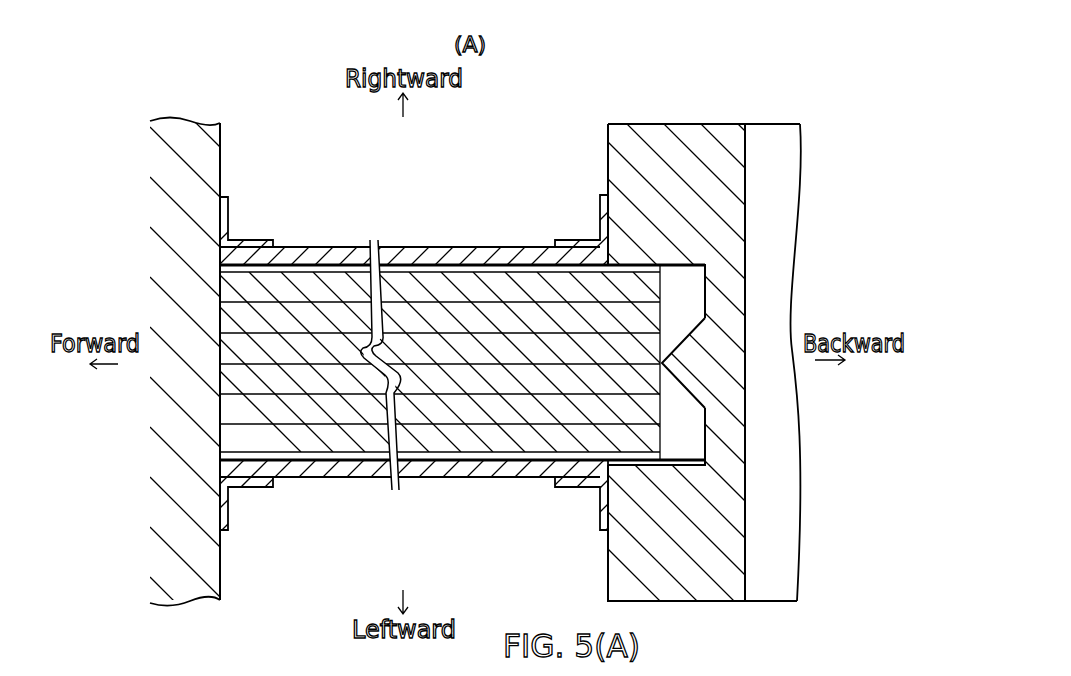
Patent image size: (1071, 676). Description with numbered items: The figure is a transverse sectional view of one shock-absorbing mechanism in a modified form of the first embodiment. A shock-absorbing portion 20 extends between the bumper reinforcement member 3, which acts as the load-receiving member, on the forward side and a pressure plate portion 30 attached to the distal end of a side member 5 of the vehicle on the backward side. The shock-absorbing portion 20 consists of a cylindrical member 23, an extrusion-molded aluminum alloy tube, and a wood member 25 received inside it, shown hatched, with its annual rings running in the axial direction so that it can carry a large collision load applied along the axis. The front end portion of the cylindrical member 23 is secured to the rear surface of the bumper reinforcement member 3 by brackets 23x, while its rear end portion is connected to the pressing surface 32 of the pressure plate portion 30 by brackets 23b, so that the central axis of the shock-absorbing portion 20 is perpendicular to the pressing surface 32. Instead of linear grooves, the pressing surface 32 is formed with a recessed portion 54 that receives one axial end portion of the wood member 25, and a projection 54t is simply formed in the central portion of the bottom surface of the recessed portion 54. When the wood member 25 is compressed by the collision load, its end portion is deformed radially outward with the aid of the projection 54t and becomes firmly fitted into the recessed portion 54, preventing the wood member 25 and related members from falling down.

The bumper reinforcement member 3 is at (197, 457).
The side member 5 is at (771, 147).
The shock-absorbing portion 20 is at (433, 233).
The cylindrical member 23 is at (500, 247).
The bracket 23x is at (255, 241).
The bracket 23b is at (576, 242).
The wood member 25 is at (436, 380).
The pressure plate portion 30 is at (678, 113).
The pressing surface 32 is at (607, 138).
The recessed portion 54 is at (704, 297).
The projection 54t is at (690, 365).